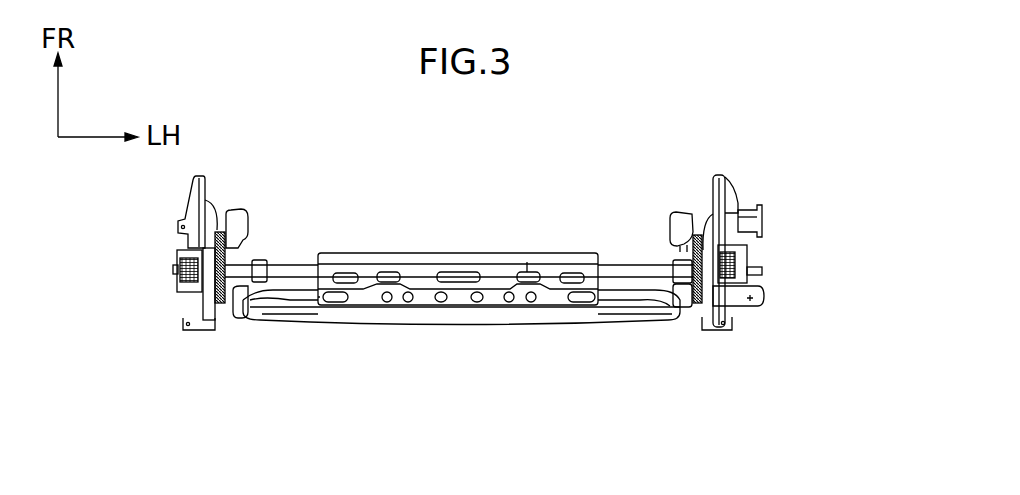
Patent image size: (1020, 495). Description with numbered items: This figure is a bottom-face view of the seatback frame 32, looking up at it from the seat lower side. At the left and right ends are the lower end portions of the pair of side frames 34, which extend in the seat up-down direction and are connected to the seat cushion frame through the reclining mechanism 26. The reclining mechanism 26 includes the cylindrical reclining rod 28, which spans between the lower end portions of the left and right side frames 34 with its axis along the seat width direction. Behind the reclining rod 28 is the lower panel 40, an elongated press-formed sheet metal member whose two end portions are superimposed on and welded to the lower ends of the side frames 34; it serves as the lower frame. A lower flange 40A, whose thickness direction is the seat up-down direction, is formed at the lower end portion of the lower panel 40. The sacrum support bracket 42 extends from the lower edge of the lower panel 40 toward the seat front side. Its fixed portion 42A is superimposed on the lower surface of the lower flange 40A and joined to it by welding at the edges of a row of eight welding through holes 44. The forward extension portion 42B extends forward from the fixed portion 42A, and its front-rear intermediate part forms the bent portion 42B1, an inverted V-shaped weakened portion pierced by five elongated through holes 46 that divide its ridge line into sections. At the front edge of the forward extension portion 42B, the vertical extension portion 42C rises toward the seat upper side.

The reclining mechanism 26 is at (784, 269).
The reclining rod 28 is at (290, 266).
The seatback frame 32 is at (660, 329).
The side frames 34 is at (229, 212).
The lower panel 40 is at (622, 325).
The lower flange 40A is at (292, 313).
The sacrum support bracket 42 is at (438, 255).
The fixed portion 42A is at (363, 313).
The forward extension portion 42B is at (498, 262).
The bent portion 42B1 is at (430, 272).
The vertical extension portion 42C is at (527, 262).
The welding through holes 44 is at (330, 305).
The through holes 46 is at (383, 272).